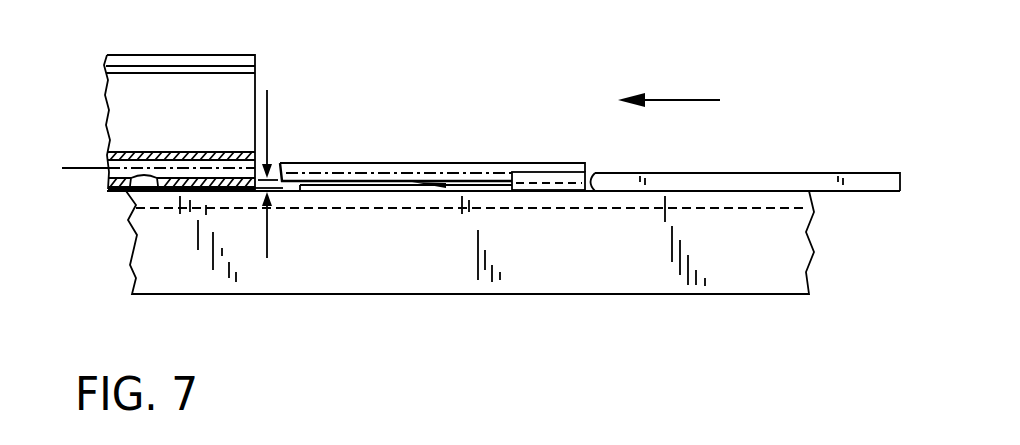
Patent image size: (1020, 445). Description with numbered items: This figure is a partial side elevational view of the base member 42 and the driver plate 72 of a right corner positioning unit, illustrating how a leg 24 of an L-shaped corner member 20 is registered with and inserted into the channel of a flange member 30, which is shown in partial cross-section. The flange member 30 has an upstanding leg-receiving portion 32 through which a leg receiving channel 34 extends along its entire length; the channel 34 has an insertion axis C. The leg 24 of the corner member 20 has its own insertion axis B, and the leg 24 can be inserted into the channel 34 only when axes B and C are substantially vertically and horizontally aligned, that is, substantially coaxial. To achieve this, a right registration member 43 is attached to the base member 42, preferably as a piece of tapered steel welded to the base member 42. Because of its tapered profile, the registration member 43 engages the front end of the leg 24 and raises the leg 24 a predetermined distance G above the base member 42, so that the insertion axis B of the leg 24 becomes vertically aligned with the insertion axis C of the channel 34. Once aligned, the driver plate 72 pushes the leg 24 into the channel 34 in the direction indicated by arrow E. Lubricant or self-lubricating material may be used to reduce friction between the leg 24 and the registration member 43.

The flange member 30 is at (257, 60).
The upstanding leg-receiving portion 32 is at (128, 145).
The leg receiving channel 34 is at (132, 180).
The leg member 24 is at (378, 163).
The L-shaped corner member 20 is at (448, 156).
The right registration member 43 is at (357, 185).
The driver plate 72 is at (775, 173).
The base member 42 is at (742, 265).
The insertion axis of channel C is at (88, 167).
The predetermined distance G is at (267, 93).
The insertion axis of leg B is at (432, 173).
The direction E is at (660, 100).